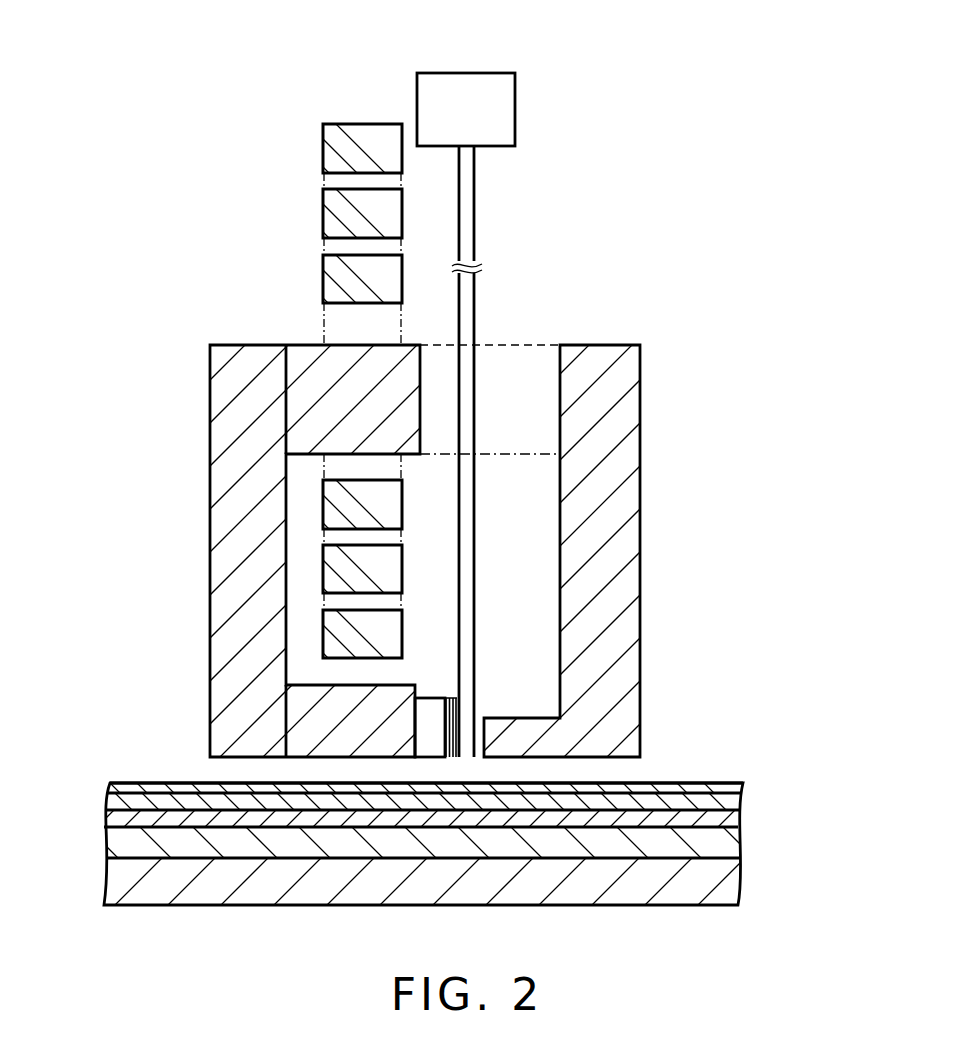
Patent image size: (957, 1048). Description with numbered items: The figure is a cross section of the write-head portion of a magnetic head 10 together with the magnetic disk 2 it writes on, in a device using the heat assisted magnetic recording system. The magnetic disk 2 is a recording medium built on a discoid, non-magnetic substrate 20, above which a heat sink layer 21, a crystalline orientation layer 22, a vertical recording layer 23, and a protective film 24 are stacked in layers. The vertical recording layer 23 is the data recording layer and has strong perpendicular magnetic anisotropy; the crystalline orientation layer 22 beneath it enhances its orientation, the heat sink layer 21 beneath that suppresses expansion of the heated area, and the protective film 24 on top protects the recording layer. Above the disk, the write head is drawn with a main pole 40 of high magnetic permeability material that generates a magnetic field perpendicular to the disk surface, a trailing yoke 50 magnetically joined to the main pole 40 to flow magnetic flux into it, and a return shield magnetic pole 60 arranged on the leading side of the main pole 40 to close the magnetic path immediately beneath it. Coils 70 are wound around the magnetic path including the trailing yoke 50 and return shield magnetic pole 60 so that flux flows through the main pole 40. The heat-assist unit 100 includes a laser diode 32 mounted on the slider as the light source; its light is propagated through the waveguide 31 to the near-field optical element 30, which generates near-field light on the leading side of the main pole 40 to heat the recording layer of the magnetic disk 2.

The magnetic disk 2 is at (432, 849).
The magnetic head 10 is at (683, 152).
The substrate 20 is at (438, 900).
The heat sink layer 21 is at (728, 845).
The crystalline orientation layer 22 is at (730, 820).
The vertical recording layer 23 is at (730, 800).
The protective film 24 is at (715, 783).
The near-field optical element 30 is at (455, 695).
The waveguide 31 is at (476, 578).
The laser diode 32 is at (507, 108).
The main pole 40 is at (430, 710).
The trailing yoke 50 is at (220, 540).
The return shield magnetic pole 60 is at (632, 525).
The coils 70 is at (327, 155).
The heat-assist unit 100 is at (407, 60).